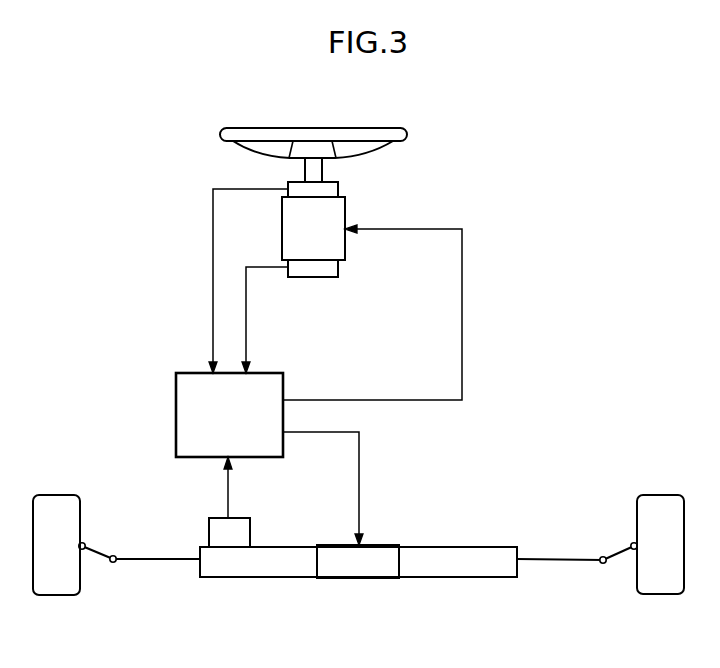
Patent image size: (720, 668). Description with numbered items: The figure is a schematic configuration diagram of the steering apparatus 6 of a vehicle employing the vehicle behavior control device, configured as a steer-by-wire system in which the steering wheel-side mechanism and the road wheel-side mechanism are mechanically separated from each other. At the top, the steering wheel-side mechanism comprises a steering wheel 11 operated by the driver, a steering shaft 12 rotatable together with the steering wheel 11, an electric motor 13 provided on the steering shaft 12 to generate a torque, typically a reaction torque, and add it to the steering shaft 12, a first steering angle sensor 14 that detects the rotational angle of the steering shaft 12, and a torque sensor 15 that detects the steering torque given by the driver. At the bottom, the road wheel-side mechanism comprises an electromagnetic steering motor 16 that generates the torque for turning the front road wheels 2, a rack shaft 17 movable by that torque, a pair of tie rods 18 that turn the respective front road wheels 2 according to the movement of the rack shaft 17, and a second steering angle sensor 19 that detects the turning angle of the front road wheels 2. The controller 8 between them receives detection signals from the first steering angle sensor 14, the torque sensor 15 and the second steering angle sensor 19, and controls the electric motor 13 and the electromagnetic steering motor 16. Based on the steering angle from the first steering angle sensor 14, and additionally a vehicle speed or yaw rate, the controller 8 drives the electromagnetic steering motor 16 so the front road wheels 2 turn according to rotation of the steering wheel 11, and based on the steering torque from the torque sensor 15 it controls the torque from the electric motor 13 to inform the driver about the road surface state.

The front road wheels 2 is at (55, 495).
The steering apparatus 6 is at (508, 129).
The controller 8 is at (176, 417).
The steering wheel 11 is at (313, 136).
The steering shaft 12 is at (310, 172).
The electric motor 13 is at (345, 245).
The first steering angle sensor 14 is at (338, 190).
The torque sensor 15 is at (313, 277).
The electromagnetic steering motor 16 is at (355, 578).
The rack shaft 17 is at (262, 577).
The tie rods 18 is at (96, 562).
The second steering angle sensor 19 is at (250, 532).